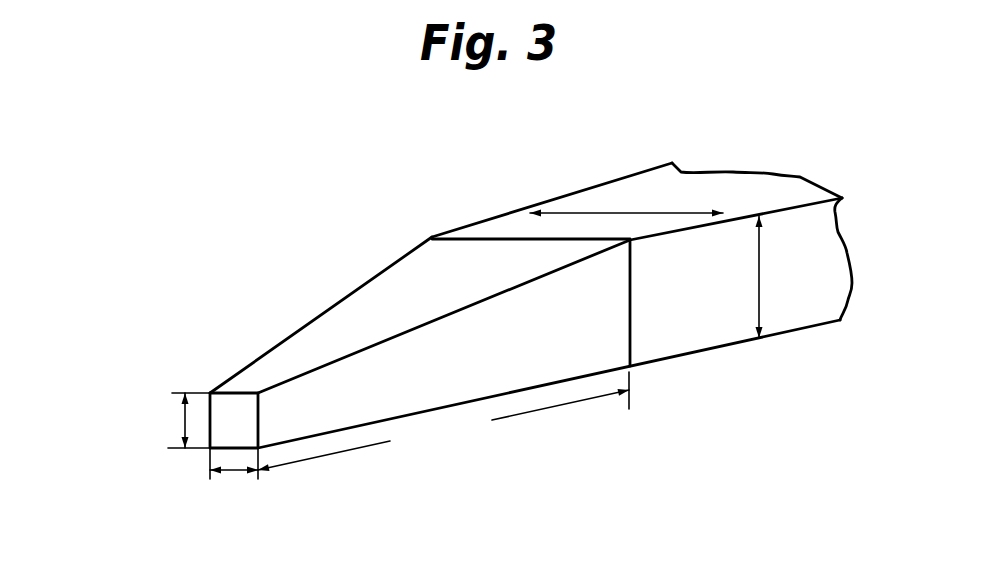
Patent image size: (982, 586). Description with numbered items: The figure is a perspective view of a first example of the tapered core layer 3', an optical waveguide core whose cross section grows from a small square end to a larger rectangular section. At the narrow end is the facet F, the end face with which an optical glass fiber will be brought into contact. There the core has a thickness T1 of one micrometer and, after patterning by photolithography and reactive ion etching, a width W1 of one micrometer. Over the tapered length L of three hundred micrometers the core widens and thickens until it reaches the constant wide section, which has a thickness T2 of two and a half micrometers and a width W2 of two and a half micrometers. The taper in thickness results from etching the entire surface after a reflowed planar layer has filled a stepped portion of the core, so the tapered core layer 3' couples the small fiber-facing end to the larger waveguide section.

The tapered core layer 3' is at (531, 305).
The facet F is at (226, 434).
The thickness T1 is at (182, 422).
The width W1 is at (233, 472).
The length L is at (443, 421).
The thickness T2 is at (760, 280).
The width W2 is at (640, 213).